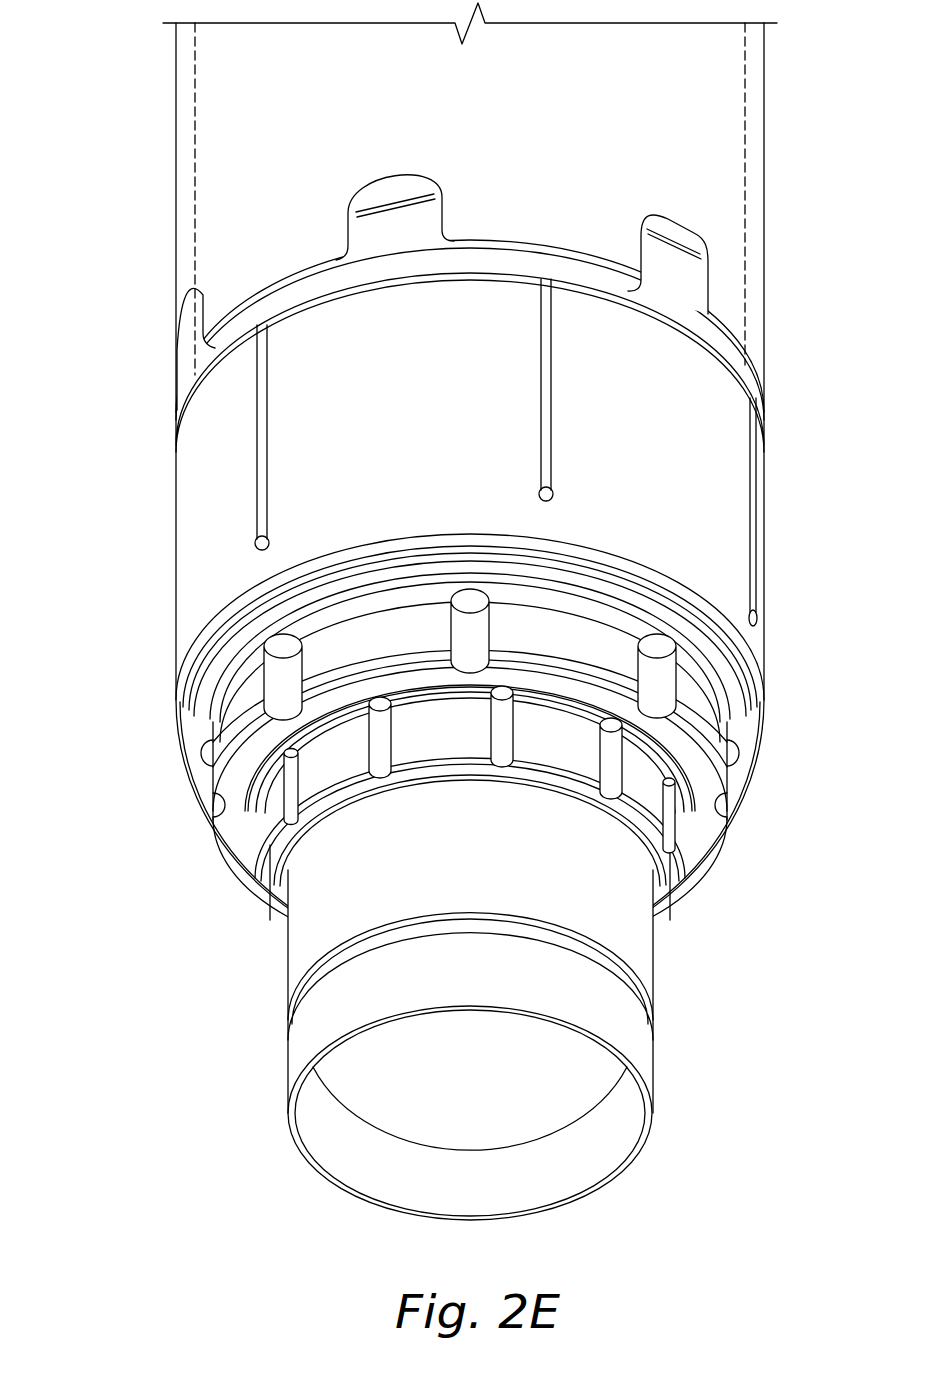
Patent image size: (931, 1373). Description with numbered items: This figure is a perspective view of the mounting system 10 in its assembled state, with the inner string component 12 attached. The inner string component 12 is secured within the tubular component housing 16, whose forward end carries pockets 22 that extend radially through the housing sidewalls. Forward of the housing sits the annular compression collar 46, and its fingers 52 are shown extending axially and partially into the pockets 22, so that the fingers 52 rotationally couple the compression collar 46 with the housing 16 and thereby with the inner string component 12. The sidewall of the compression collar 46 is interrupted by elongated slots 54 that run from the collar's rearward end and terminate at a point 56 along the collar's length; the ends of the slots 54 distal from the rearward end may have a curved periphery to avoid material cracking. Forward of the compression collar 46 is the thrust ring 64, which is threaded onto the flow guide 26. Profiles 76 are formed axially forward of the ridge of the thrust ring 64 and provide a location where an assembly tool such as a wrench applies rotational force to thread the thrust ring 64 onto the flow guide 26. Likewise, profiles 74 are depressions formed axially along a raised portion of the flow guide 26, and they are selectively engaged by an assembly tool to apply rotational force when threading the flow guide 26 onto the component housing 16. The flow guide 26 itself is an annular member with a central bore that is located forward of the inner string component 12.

The mounting system 10 is at (124, 143).
The inner string component 12 is at (748, 86).
The component housing 16 is at (766, 176).
The pockets 22 is at (403, 183).
The fingers 52 is at (378, 228).
The elongated slots 54 is at (268, 413).
The point 56 is at (255, 543).
The compression collar 46 is at (170, 592).
The thrust ring 64 is at (230, 860).
The profiles 76 is at (454, 628).
The profiles 74 is at (489, 716).
The flow guide 26 is at (282, 962).